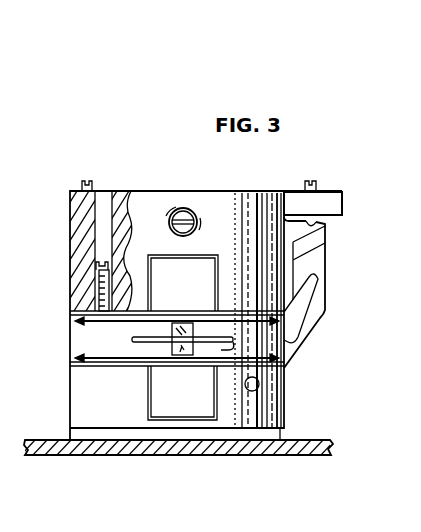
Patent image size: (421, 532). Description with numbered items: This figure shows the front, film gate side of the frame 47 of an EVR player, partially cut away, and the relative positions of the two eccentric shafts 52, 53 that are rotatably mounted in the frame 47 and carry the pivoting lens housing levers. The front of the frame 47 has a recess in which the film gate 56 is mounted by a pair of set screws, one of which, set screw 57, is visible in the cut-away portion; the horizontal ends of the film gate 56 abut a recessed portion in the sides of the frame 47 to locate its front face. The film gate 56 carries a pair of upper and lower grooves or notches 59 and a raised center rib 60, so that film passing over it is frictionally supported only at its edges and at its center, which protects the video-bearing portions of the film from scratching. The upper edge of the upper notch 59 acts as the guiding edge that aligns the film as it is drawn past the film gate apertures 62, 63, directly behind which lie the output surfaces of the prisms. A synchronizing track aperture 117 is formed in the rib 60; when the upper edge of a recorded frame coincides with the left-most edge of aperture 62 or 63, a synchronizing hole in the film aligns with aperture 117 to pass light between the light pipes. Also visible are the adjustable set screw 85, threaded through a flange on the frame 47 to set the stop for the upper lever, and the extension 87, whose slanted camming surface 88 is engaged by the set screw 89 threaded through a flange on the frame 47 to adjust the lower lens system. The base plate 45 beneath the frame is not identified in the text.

The base plate 45 is at (312, 455).
The frame 47 is at (70, 218).
The eccentric shaft 52 is at (186, 210).
The eccentric shaft 53 is at (259, 386).
The film gate 56 is at (187, 412).
The set screw 57 is at (100, 287).
The upper and lower grooves or notches 59 is at (95, 355).
The raised center rib 60 is at (290, 340).
The film gate aperture 62 is at (180, 326).
The film gate aperture 63 is at (190, 350).
The adjustable set screw 85 is at (87, 180).
The extension 87 is at (327, 288).
The camming surface 88 is at (318, 223).
The set screw 89 is at (312, 180).
The synchronizing track aperture 117 is at (160, 339).